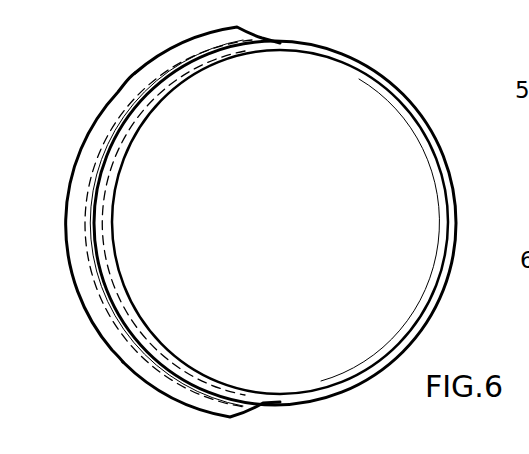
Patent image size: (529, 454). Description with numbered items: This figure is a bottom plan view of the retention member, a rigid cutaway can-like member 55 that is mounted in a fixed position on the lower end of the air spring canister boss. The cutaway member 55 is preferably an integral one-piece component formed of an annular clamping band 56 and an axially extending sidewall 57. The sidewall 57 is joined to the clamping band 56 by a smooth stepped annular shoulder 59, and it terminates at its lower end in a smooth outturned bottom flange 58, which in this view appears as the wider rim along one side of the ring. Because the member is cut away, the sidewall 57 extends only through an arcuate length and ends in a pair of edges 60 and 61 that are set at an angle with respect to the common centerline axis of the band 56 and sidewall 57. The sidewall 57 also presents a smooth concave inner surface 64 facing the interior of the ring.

The cutaway can-like member 55 is at (390, 76).
The annular clamping band 56 is at (440, 296).
The sidewall 57 is at (82, 244).
The outturned bottom flange 58 is at (93, 296).
The stepped annular shoulder 59 is at (177, 65).
The edge 60 is at (197, 40).
The edge 61 is at (187, 393).
The concave inner surface 64 is at (100, 167).